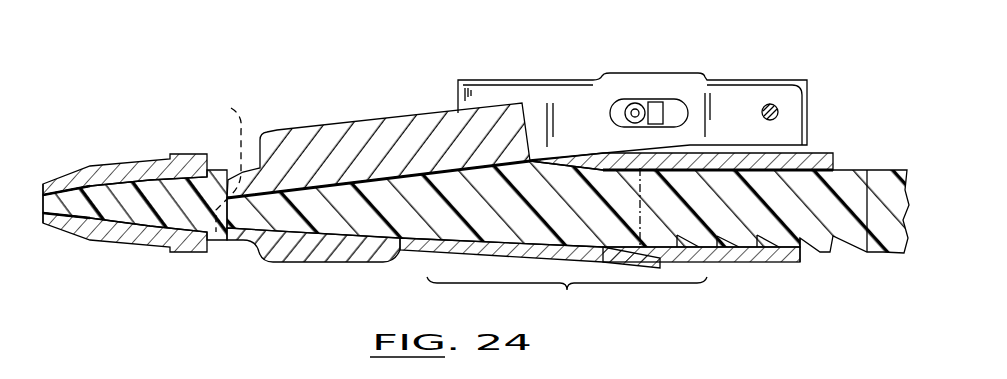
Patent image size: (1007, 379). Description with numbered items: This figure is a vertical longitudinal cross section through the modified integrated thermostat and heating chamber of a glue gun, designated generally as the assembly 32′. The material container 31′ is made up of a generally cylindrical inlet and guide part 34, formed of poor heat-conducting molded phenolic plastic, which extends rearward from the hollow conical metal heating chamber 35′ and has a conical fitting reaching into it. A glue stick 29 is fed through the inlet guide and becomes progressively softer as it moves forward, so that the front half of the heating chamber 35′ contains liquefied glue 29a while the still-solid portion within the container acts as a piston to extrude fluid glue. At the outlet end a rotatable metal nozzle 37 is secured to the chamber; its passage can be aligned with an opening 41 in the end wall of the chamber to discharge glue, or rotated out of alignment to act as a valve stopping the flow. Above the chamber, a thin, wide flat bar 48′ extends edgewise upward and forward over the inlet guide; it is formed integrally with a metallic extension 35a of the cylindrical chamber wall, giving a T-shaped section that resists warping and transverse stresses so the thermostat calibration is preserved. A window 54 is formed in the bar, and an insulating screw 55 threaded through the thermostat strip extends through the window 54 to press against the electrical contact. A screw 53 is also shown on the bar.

The glue stick 29 is at (842, 180).
The liquefied glue 29a is at (322, 224).
The material container 31′ is at (567, 299).
The clamping assembly 32′ is at (502, 68).
The inlet and guide part 34 is at (723, 262).
The heating chamber 35′ is at (398, 121).
The metallic extension 35a is at (729, 150).
The nozzle 37 is at (138, 167).
The opening 41 is at (220, 163).
The flat bar 48′ is at (563, 100).
The screw 53 is at (782, 110).
The window 54 is at (673, 106).
The screw 55 is at (634, 106).